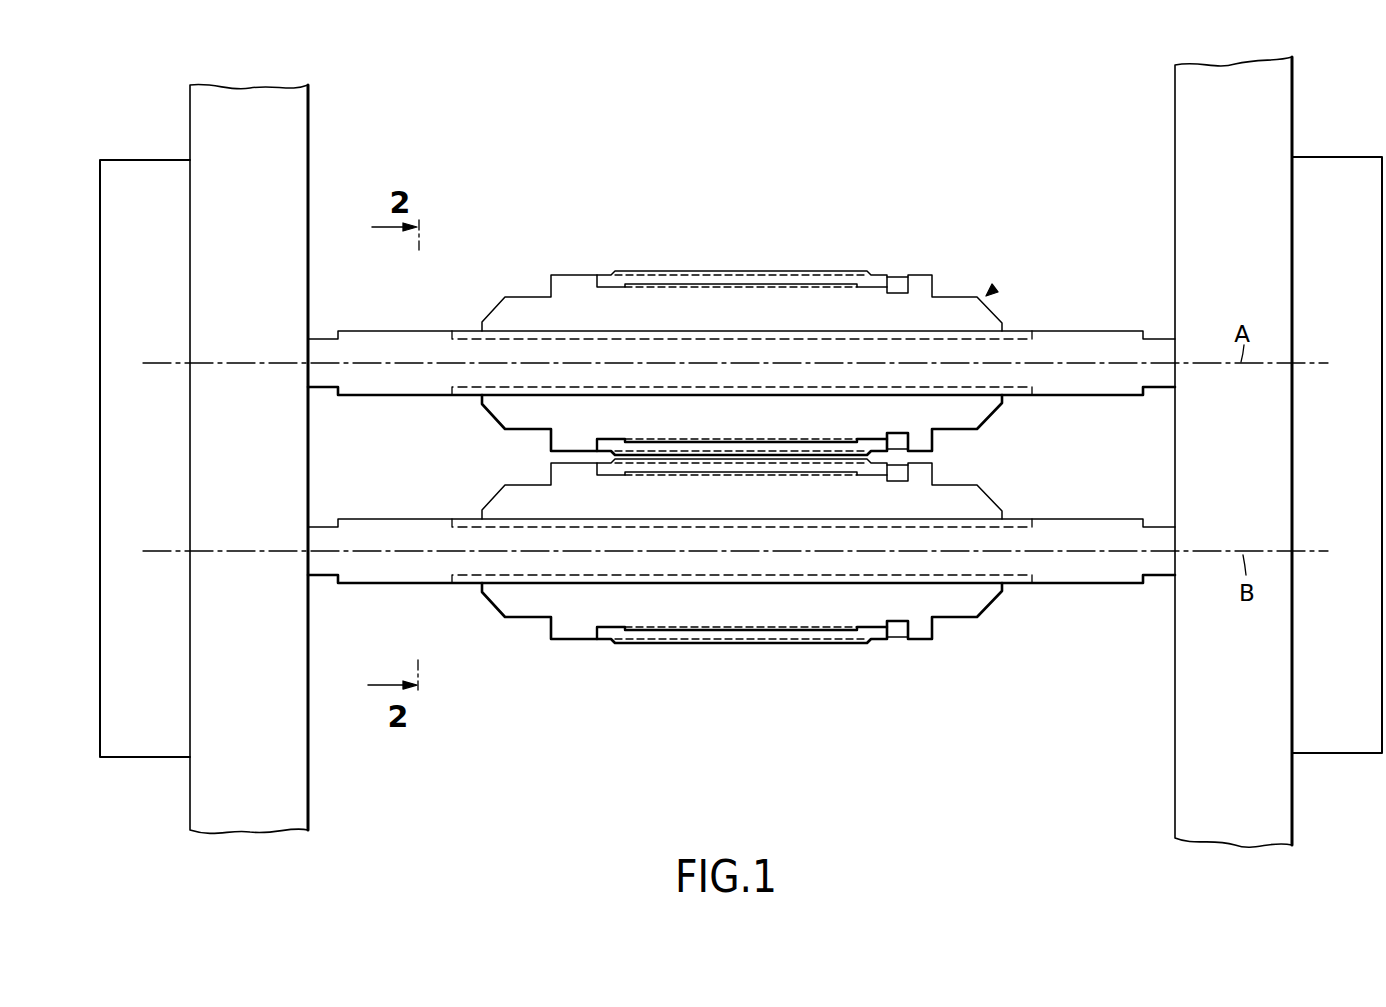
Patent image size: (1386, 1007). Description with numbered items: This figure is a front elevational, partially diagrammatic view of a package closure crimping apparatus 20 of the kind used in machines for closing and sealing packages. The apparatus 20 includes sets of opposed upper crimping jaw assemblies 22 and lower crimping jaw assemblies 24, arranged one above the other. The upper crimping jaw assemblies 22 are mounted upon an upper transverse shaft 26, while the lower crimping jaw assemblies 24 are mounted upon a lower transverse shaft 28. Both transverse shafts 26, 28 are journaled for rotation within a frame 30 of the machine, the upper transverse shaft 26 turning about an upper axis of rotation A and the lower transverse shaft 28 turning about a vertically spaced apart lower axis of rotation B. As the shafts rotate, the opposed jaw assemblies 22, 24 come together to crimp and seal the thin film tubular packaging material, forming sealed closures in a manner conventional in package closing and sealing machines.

The package closure crimping apparatus 20 is at (990, 292).
The upper crimping jaw assemblies 22 is at (920, 280).
The lower crimping jaw assemblies 24 is at (985, 507).
The upper transverse shaft 26 is at (1077, 340).
The lower transverse shaft 28 is at (1123, 573).
The frame 30 is at (1175, 124).